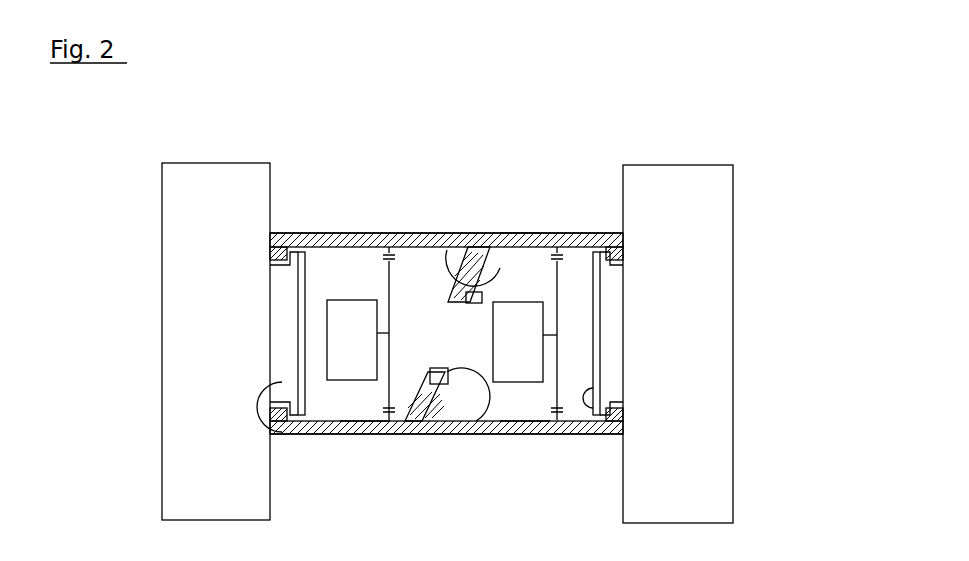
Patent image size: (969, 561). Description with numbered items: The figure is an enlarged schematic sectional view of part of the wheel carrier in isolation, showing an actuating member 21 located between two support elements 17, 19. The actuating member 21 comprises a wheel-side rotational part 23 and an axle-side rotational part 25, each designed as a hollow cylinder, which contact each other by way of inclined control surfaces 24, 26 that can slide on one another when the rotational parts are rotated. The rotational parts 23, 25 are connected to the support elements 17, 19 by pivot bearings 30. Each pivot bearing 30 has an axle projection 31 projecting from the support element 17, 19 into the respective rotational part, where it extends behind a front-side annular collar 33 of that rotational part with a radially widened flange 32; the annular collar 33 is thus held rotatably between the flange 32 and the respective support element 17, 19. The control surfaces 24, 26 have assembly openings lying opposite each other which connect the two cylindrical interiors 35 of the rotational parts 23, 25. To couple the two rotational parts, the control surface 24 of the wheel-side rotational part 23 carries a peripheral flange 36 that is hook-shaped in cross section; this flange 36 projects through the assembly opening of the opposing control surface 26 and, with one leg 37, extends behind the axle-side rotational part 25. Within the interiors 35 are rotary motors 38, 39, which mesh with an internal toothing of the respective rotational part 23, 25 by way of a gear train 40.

The support element 17 is at (233, 484).
The support element 19 is at (691, 484).
The actuating member 21 is at (450, 98).
The wheel-side rotational part 23 is at (347, 233).
The inclined control surface 24 is at (452, 233).
The axle-side rotational part 25 is at (563, 233).
The inclined control surface 26 is at (520, 233).
The pivot bearing 30 is at (264, 257).
The axle projection 31 is at (272, 433).
The flange 32 is at (313, 233).
The annular collar 33 is at (290, 233).
The cylindrical interior 35 is at (362, 408).
The peripheral flange 36 is at (450, 370).
The leg 37 is at (447, 380).
The rotary motor 38 is at (371, 369).
The rotary motor 39 is at (536, 338).
The gear train 40 is at (390, 287).